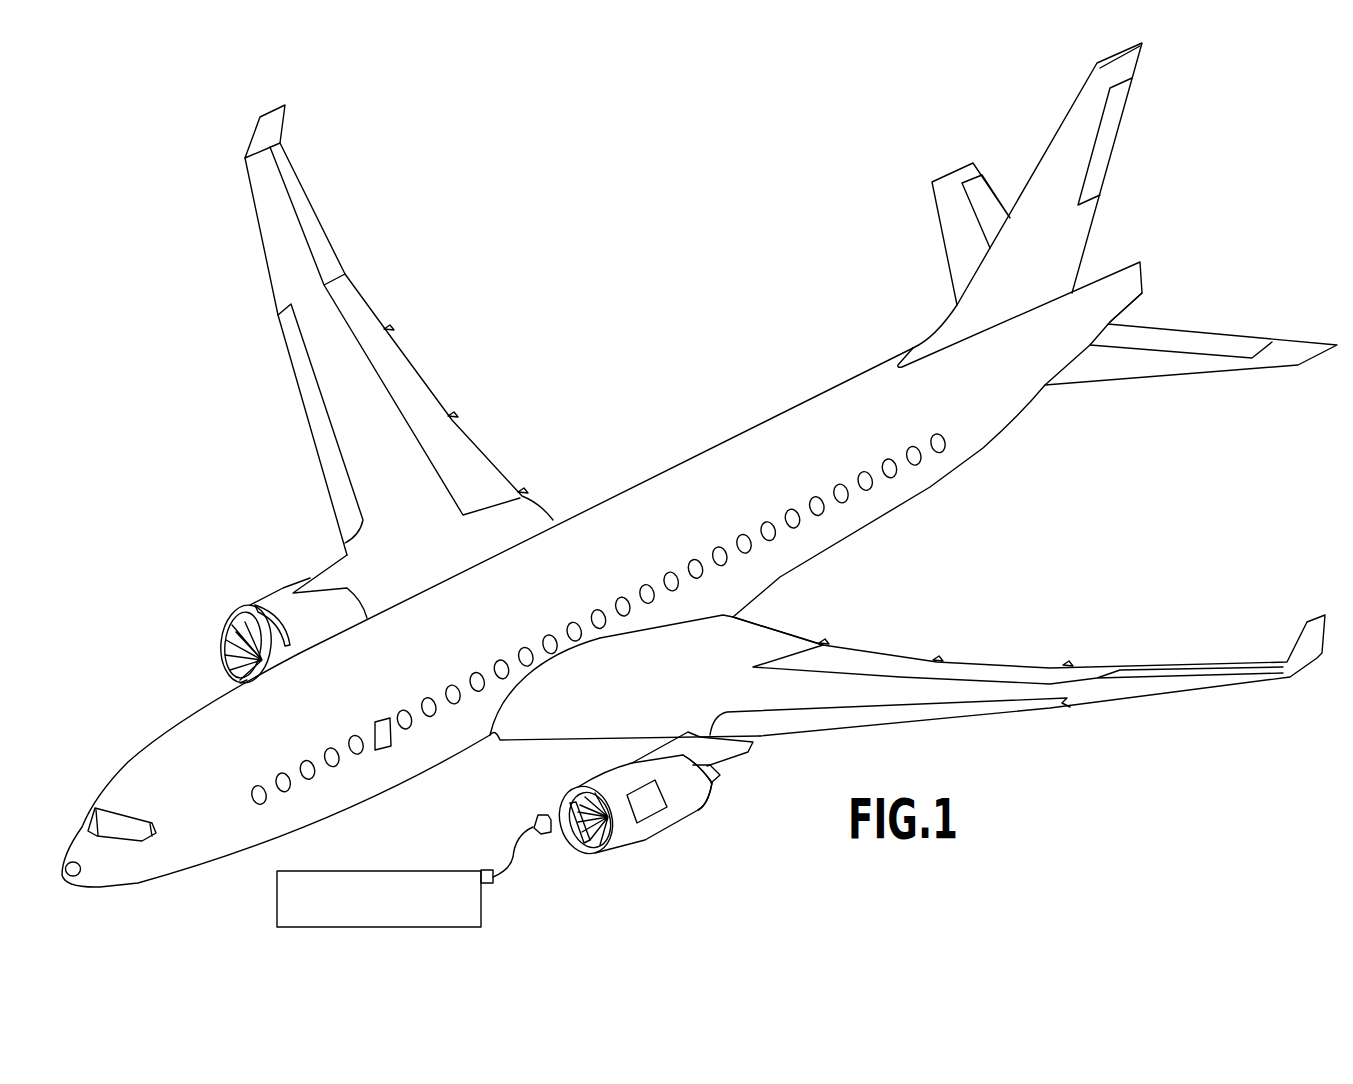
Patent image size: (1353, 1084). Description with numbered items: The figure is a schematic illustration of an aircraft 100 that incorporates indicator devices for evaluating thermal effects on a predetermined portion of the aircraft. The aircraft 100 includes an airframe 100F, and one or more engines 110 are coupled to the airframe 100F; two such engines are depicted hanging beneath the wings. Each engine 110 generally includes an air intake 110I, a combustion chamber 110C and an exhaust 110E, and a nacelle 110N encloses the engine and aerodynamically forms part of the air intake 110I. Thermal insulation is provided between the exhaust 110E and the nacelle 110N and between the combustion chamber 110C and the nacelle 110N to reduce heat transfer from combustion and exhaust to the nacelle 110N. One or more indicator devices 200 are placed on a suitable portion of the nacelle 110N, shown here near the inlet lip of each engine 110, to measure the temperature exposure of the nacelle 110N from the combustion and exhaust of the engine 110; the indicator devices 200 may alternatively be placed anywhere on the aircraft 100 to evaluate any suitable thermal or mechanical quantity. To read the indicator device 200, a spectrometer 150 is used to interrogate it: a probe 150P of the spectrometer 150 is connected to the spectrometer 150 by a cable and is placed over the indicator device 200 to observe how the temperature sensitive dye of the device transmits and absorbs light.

The aircraft 100 is at (203, 371).
The airframe 100F is at (335, 808).
The engine 110 is at (221, 646).
The nacelle 110N is at (243, 608).
The combustion chamber 110C is at (680, 782).
The exhaust 110E is at (730, 782).
The air intake 110I is at (583, 857).
The indicator device 200 is at (280, 592).
The spectrometer 150 is at (375, 930).
The probe 150P is at (517, 833).